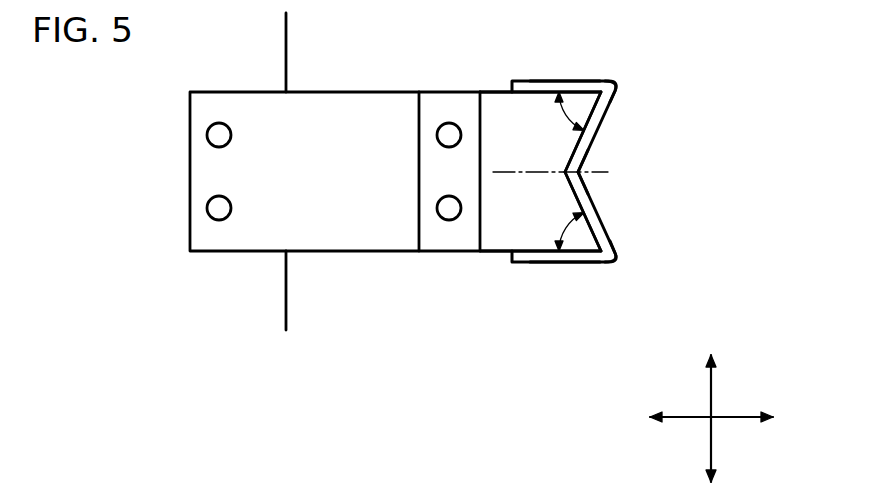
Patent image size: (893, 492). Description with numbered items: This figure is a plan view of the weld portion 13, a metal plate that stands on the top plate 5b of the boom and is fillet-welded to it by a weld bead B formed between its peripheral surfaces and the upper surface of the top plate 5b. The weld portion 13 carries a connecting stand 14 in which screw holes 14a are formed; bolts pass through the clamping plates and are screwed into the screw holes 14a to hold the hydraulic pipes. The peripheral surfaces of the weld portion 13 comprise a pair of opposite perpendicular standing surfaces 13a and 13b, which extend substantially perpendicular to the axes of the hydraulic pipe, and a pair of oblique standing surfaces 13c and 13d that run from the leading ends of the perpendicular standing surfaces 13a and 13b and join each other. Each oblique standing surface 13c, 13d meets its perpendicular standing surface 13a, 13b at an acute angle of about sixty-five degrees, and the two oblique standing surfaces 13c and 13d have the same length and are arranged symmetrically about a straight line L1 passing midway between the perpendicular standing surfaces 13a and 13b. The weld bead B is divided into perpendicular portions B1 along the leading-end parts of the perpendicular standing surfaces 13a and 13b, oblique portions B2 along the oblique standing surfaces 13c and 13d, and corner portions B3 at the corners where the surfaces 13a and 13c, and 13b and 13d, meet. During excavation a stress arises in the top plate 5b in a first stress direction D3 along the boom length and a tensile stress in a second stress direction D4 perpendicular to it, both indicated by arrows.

The top plate 5b is at (285, 28).
The weld portion 13 is at (202, 163).
The perpendicular standing surface 13a is at (495, 92).
The perpendicular standing surface 13b is at (500, 251).
The oblique standing surface 13c is at (592, 123).
The oblique standing surface 13d is at (592, 221).
The connecting stand 14 is at (440, 103).
The screw holes 14a is at (442, 136).
The weld bead B is at (630, 49).
The perpendicular portions B1 is at (574, 81).
The oblique portions B2 is at (587, 197).
The corner portions B3 is at (612, 85).
The straight line L1 is at (512, 170).
The first stress direction D3 is at (710, 405).
The second stress direction D4 is at (728, 418).